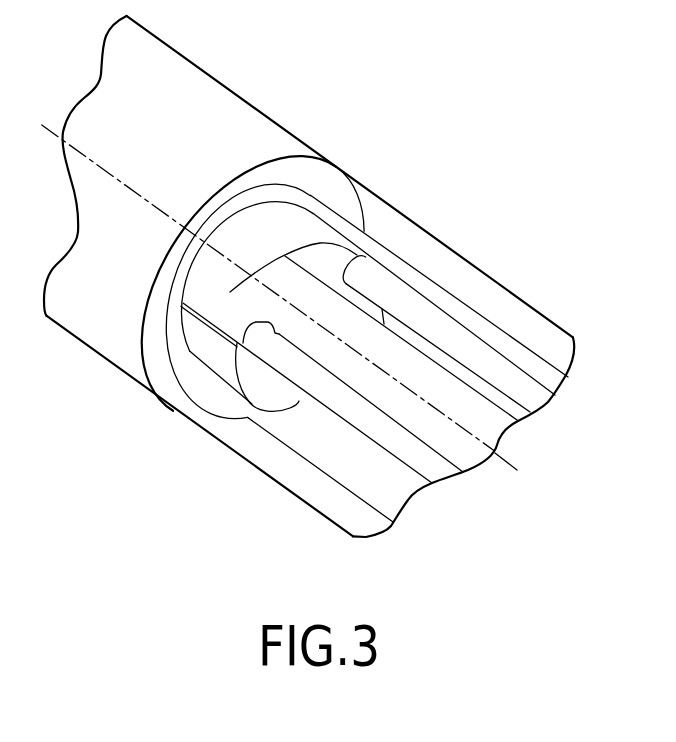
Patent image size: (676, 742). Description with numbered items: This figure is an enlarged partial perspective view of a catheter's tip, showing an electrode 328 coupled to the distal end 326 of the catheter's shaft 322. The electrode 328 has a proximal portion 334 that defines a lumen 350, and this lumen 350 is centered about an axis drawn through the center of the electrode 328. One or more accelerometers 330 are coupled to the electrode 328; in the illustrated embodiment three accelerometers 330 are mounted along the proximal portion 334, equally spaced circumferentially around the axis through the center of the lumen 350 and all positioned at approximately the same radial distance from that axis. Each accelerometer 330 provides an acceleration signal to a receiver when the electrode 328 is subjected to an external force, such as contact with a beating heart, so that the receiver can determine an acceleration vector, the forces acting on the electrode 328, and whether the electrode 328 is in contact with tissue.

The shaft 322 is at (477, 268).
The distal end 326 is at (383, 130).
The electrode 328 is at (218, 76).
The accelerometers 330 is at (351, 255).
The proximal portion 334 is at (313, 178).
The lumen 350 is at (278, 204).